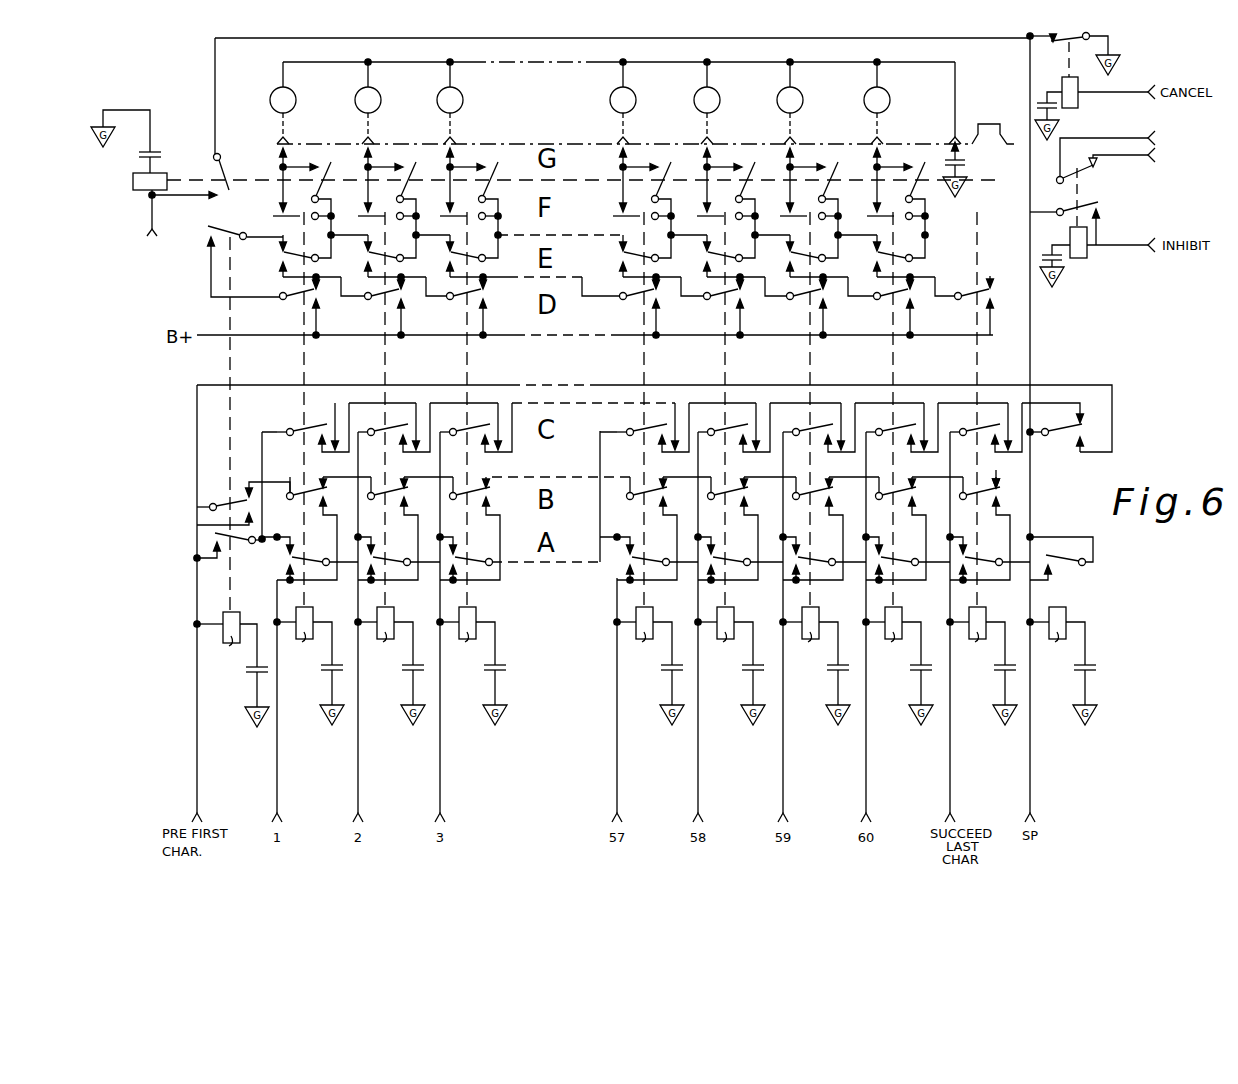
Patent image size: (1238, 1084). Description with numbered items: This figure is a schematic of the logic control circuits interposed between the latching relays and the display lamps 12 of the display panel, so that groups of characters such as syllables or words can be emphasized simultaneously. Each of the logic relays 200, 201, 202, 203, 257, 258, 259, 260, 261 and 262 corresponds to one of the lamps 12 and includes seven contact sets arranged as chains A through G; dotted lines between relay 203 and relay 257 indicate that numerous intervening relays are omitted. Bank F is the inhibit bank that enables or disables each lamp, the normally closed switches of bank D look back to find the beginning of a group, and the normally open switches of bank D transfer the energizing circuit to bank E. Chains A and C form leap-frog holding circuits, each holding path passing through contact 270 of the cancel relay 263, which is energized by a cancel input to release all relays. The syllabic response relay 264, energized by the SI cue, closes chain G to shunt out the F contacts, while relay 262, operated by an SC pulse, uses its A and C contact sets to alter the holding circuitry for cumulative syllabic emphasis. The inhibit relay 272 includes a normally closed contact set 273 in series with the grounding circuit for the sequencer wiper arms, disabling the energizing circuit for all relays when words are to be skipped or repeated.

The display lamps 12 is at (609, 200).
The relay 200 is at (231, 669).
The relay 201 is at (309, 666).
The relay 202 is at (390, 666).
The relay 203 is at (472, 666).
The relay 257 is at (649, 666).
The relay 258 is at (730, 666).
The relay 259 is at (815, 666).
The relay 260 is at (898, 666).
The relay 261 is at (982, 666).
The relay 262 is at (1062, 666).
The cancel relay 263 is at (1078, 97).
The syllabic response relay 264 is at (160, 173).
The cancel relay contact 270 is at (1058, 33).
The inhibit relay 272 is at (1087, 257).
The normally closed contact set 273 is at (1084, 172).